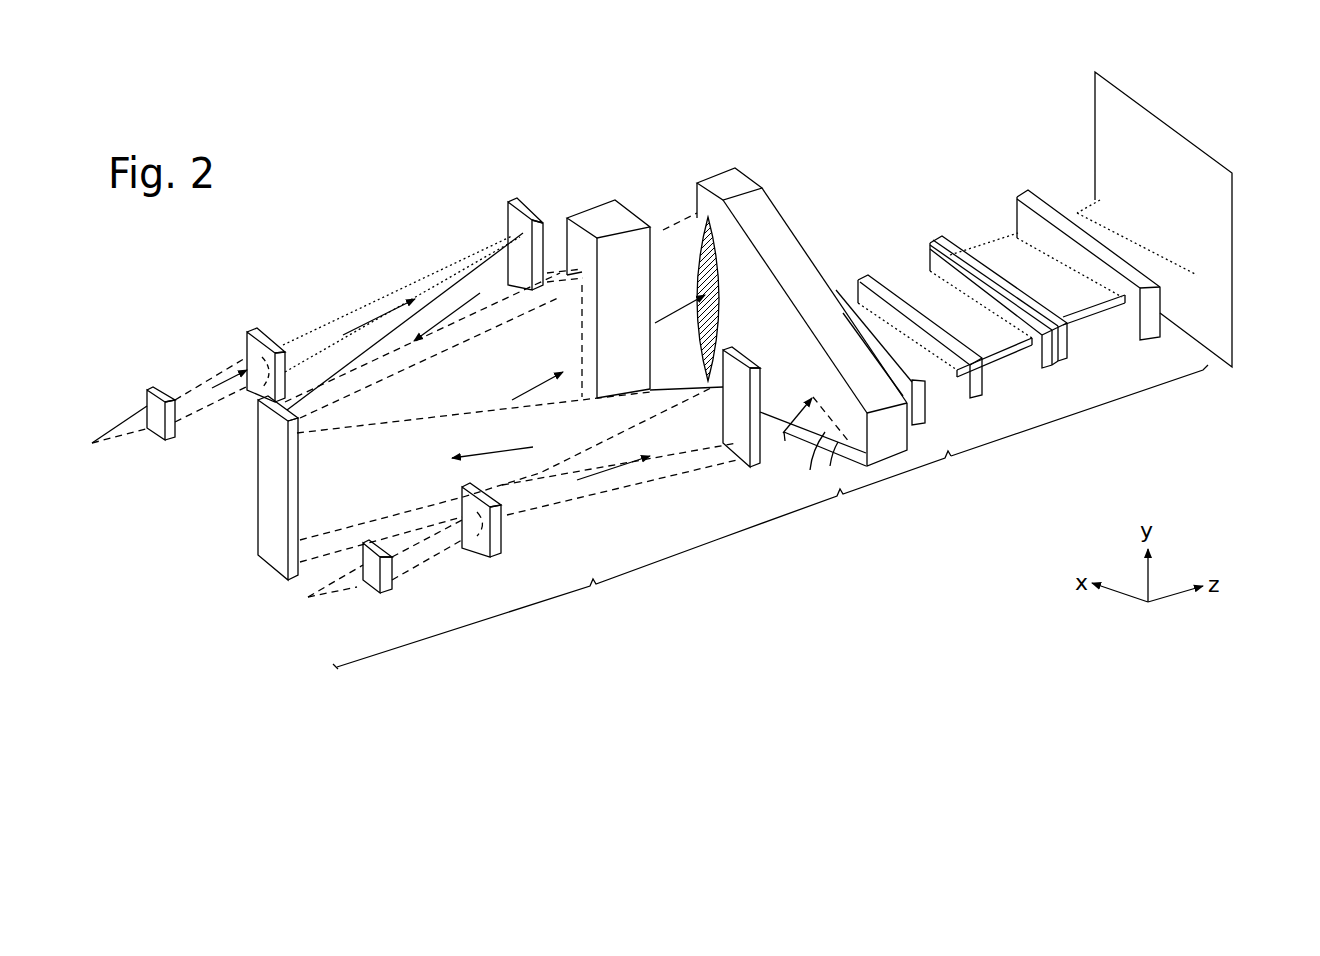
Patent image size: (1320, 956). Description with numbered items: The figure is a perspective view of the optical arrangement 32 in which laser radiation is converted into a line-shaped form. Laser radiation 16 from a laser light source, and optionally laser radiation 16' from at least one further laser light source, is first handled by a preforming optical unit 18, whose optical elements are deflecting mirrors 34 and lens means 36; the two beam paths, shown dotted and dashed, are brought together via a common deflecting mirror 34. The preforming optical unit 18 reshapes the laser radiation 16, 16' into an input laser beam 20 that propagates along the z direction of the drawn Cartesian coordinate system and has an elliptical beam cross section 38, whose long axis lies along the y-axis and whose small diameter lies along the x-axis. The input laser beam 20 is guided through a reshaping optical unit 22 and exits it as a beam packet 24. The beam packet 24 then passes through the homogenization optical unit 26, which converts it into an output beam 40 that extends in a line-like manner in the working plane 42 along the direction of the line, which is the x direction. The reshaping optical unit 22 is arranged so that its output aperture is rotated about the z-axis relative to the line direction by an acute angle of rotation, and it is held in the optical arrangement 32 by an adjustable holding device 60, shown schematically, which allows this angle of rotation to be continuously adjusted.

The laser radiation 16 is at (180, 449).
The laser radiation from further laser light source 16' is at (379, 584).
The preforming optical unit 18 is at (524, 604).
The input laser beam 20 is at (673, 308).
The reshaping optical unit 22 is at (833, 495).
The beam packet 24 is at (917, 438).
The homogenization optical unit 26 is at (1079, 410).
The optical arrangement 32 is at (353, 253).
The deflecting mirror 34 is at (527, 200).
The lens means 36 is at (607, 218).
The elliptical beam cross section 38 is at (701, 229).
The output beam 40 is at (1140, 222).
The working plane 42 is at (1212, 242).
The adjustable holding device 60 is at (851, 450).